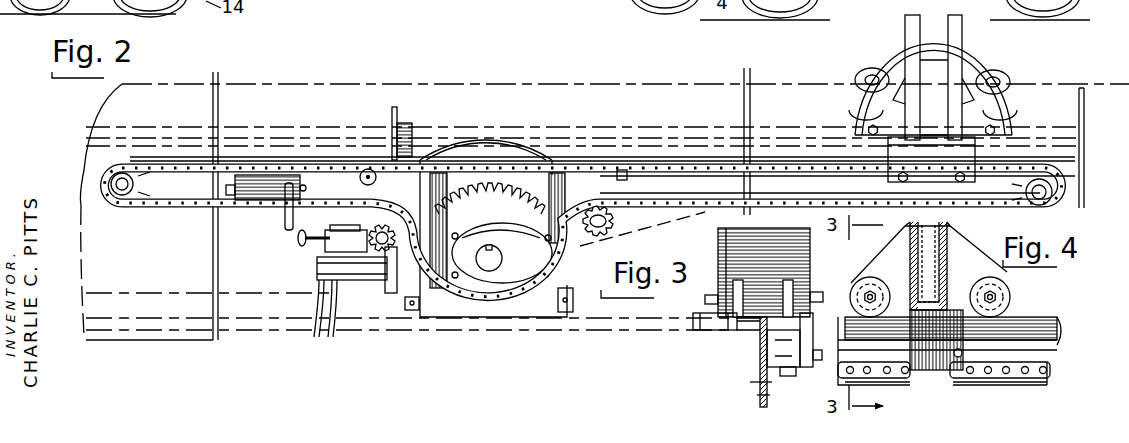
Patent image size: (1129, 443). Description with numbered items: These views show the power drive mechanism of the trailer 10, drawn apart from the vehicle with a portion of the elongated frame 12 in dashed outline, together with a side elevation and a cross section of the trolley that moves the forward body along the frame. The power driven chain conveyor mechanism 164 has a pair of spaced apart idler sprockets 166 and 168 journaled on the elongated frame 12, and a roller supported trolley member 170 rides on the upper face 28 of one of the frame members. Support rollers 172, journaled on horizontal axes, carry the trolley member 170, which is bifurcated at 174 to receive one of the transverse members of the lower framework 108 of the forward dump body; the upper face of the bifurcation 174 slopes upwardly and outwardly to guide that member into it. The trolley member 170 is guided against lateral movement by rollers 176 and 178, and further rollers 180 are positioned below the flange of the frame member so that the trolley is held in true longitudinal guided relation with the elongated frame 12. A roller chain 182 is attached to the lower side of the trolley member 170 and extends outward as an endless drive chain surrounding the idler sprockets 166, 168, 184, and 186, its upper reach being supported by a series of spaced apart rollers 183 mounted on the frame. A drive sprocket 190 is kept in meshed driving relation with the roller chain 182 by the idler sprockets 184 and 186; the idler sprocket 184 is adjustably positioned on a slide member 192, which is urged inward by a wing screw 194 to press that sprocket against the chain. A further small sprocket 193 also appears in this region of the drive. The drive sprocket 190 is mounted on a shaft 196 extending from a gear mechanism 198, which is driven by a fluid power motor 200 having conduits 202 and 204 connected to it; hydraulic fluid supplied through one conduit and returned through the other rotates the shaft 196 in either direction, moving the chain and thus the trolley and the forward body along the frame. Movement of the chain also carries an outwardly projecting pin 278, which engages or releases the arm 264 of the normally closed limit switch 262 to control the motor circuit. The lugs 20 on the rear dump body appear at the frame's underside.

In FIG. 2, the trailer 10 is at (450, 336).
In FIG. 3, the trailer 10 is at (762, 391).
In FIG. 4, the trailer 10 is at (1070, 330).
In FIG. 2, the elongated frame 12 is at (88, 154).
In FIG. 3, the elongated frame 12 is at (760, 344).
In FIG. 4, the elongated frame 12 is at (1028, 388).
In FIG. 2, the apertured lugs 20 is at (355, 181).
In FIG. 2, the upper face 28 is at (563, 92).
In FIG. 3, the upper face 28 is at (768, 318).
In FIG. 4, the upper face 28 is at (1047, 323).
In FIG. 4, the lower framework 108 is at (940, 283).
In FIG. 2, the power driven chain conveyor mechanism 164 is at (530, 303).
In FIG. 2, the idler sprocket 166 is at (158, 196).
In FIG. 2, the idler sprocket 168 is at (1041, 172).
In FIG. 2, the roller supported trolley member 170 is at (854, 69).
In FIG. 3, the roller supported trolley member 170 is at (712, 288).
In FIG. 4, the roller supported trolley member 170 is at (856, 297).
In FIG. 2, the support rollers 172 is at (858, 108).
In FIG. 3, the support rollers 172 is at (735, 283).
In FIG. 4, the support rollers 172 is at (854, 279).
In FIG. 2, the bifurcation 174 is at (934, 55).
In FIG. 4, the bifurcation 174 is at (930, 270).
In FIG. 3, the roller 176 is at (709, 324).
In FIG. 3, the roller 178 is at (780, 356).
In FIG. 4, the roller 178 is at (918, 367).
In FIG. 2, the rollers 180 is at (878, 158).
In FIG. 3, the rollers 180 is at (789, 368).
In FIG. 4, the rollers 180 is at (903, 373).
In FIG. 2, the roller chain 182 is at (716, 160).
In FIG. 3, the roller chain 182 is at (762, 393).
In FIG. 4, the roller chain 182 is at (1048, 379).
In FIG. 2, the rollers 183 is at (373, 162).
In FIG. 2, the idler sprocket 184 is at (325, 245).
In FIG. 2, the idler sprocket 186 is at (616, 229).
In FIG. 2, the drive sprocket 190 is at (499, 184).
In FIG. 2, the slide member 192 is at (366, 170).
In FIG. 2, the take-up sprocket 193 is at (338, 228).
In FIG. 2, the wing screw 194 is at (298, 241).
In FIG. 2, the shaft 196 is at (486, 292).
In FIG. 2, the gear mechanism 198 is at (480, 150).
In FIG. 2, the fluid power motor 200 is at (368, 275).
In FIG. 2, the conduit 202 is at (330, 335).
In FIG. 2, the conduit 204 is at (316, 332).
In FIG. 2, the normally closed limit switch 262 is at (258, 176).
In FIG. 2, the arm 264 is at (272, 211).
In FIG. 2, the outwardly projecting pin 278 is at (620, 172).